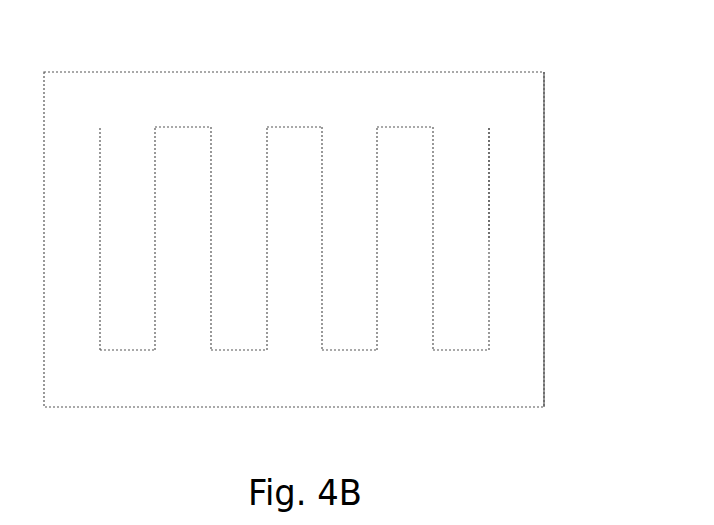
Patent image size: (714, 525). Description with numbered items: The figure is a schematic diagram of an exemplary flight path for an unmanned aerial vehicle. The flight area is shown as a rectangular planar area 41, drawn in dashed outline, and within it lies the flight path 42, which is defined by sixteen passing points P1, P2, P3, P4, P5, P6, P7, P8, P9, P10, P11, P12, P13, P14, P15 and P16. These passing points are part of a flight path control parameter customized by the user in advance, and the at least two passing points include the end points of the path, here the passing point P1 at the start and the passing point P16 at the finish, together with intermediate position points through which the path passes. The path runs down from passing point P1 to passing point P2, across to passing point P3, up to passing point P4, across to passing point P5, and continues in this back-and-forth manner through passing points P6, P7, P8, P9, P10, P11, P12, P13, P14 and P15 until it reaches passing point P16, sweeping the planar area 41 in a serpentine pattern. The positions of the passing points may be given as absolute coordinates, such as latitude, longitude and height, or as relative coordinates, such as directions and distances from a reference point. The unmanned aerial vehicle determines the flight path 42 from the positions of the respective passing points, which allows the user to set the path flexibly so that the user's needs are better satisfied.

The planar area 41 is at (294, 210).
The flight path 42 is at (354, 242).
The passing point P1 is at (99, 227).
The passing point P2 is at (120, 365).
The passing point P3 is at (153, 253).
The passing point P4 is at (175, 117).
The passing point P5 is at (209, 227).
The passing point P6 is at (231, 365).
The passing point P7 is at (266, 253).
The passing point P8 is at (287, 117).
The passing point P9 is at (321, 227).
The passing point P10 is at (339, 365).
The passing point P11 is at (376, 253).
The passing point P12 is at (394, 117).
The passing point P13 is at (432, 227).
The passing point P14 is at (450, 365).
The passing point P15 is at (488, 254).
The passing point P16 is at (488, 172).